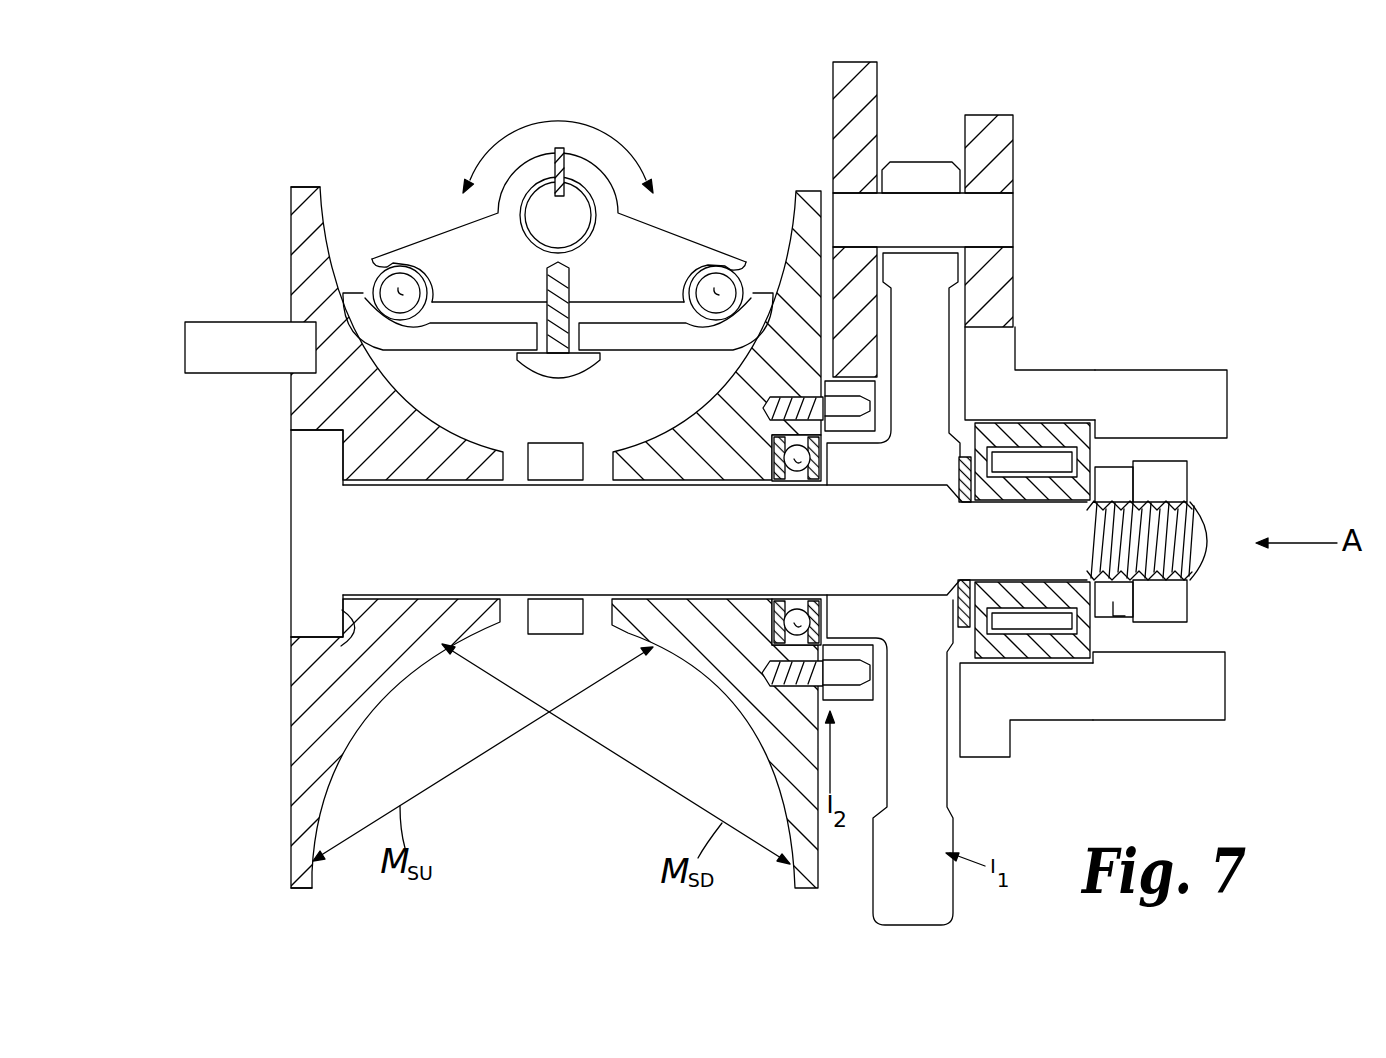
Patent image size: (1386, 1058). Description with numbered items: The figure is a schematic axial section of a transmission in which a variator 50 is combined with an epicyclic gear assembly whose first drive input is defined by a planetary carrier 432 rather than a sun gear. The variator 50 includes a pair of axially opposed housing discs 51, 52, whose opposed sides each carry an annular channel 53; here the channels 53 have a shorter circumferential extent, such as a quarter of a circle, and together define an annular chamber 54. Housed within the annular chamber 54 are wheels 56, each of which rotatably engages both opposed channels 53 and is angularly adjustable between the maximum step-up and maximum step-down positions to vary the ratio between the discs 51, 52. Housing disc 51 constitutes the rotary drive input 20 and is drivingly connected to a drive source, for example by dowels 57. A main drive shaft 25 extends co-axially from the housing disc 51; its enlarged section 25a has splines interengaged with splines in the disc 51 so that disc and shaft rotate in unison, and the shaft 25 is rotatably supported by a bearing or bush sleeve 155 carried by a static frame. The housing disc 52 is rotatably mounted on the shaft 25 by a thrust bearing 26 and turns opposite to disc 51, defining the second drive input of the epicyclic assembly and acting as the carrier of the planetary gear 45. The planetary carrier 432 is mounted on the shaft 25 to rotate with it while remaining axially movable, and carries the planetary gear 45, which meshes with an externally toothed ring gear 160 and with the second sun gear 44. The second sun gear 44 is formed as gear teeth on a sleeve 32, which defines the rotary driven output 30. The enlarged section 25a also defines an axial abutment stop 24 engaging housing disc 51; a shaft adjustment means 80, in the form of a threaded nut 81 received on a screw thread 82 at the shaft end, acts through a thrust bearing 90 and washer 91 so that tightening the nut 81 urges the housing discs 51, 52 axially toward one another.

The rotary drive input 20 is at (254, 641).
The axial abutment stop 24 is at (330, 665).
The main drive shaft 25 is at (376, 543).
The enlarged section 25a is at (303, 615).
The thrust bearing 26 is at (757, 640).
The rotary driven output 30 is at (1145, 520).
The sleeve 32 is at (1172, 388).
The second sun gear 44 is at (1000, 357).
The planetary gear 45 is at (995, 110).
The variator 50 is at (393, 507).
The housing disc 51 is at (305, 276).
The housing disc 52 is at (805, 186).
The annular channel 53 is at (320, 214).
The annular chamber 54 is at (438, 390).
The wheel 56 is at (667, 345).
The dowel 57 is at (225, 363).
The shaft adjustment means 80 is at (1214, 524).
The threaded nut 81 is at (1168, 490).
The screw thread 82 is at (1180, 548).
The thrust bearing 90 is at (1065, 665).
The washer 91 is at (1113, 610).
The bearing or bush sleeve 155 is at (562, 440).
The externally toothed ring gear 160 is at (857, 700).
The planetary carrier 432 is at (899, 348).